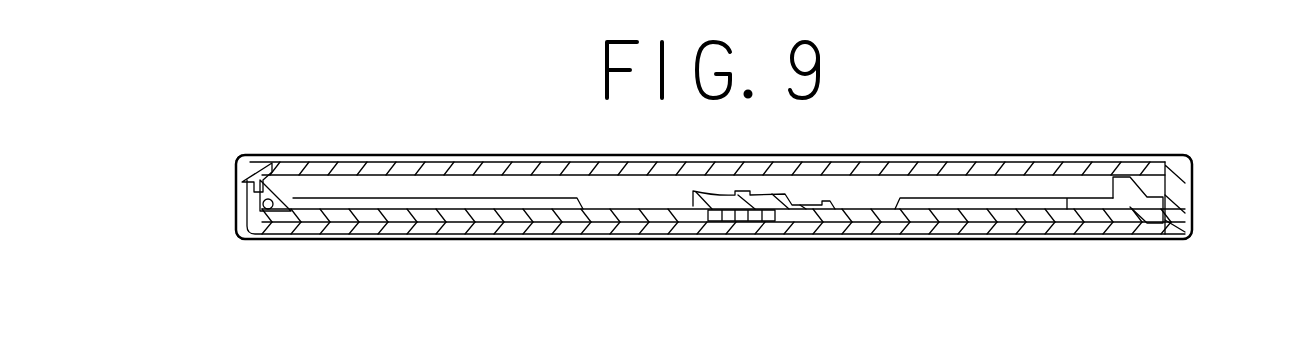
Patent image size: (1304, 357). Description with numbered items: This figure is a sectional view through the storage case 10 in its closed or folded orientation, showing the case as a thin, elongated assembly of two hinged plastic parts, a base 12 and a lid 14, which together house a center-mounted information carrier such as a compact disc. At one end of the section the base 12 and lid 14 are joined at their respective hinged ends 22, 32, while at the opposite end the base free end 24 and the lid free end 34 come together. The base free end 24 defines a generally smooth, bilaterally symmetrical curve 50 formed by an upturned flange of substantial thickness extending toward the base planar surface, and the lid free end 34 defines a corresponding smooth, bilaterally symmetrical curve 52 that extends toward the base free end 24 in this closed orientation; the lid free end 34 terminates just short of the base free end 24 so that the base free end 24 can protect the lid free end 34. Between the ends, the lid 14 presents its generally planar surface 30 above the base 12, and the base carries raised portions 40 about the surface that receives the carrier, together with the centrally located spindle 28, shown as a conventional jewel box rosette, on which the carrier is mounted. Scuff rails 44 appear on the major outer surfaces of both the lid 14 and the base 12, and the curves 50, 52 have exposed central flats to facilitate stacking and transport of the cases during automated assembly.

The storage case 10 is at (1060, 141).
The base 12 is at (337, 241).
The lid 14 is at (336, 153).
The hinged end 22 is at (199, 190).
The hinged end 32 is at (237, 205).
The free end 24 is at (1182, 251).
The curve 50 is at (1190, 217).
The spindle 28 is at (713, 193).
The planar surface 30 is at (527, 177).
The free end 34 is at (1228, 180).
The curve 52 is at (1213, 164).
The raised portions 40 is at (472, 203).
The scuff rails 44 is at (245, 163).